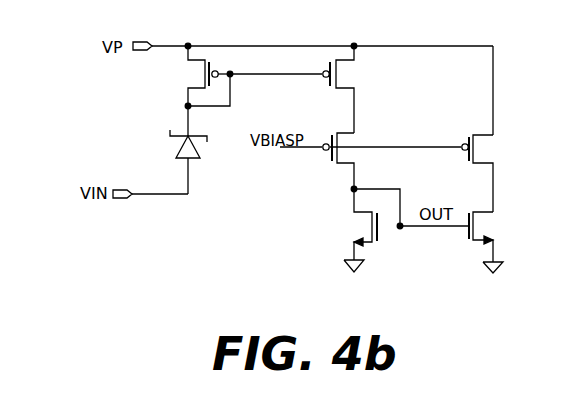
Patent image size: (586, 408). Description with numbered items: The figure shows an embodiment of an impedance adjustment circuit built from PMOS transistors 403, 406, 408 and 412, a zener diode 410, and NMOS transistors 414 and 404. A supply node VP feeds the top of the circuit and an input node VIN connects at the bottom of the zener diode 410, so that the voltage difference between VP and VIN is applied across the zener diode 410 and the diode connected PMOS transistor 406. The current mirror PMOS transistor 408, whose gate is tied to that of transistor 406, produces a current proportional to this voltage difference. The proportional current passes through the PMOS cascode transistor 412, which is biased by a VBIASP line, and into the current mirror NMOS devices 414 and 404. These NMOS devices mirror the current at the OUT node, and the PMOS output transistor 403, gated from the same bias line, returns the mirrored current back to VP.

The diode connected PMOS transistor 406 is at (194, 76).
The current mirror PMOS transistor 408 is at (352, 83).
The zener diode 410 is at (175, 143).
The PMOS cascode transistor 412 is at (356, 135).
The PMOS output transistor 403 is at (488, 152).
The current mirror NMOS device 404 is at (488, 228).
The current mirror NMOS device 414 is at (362, 221).